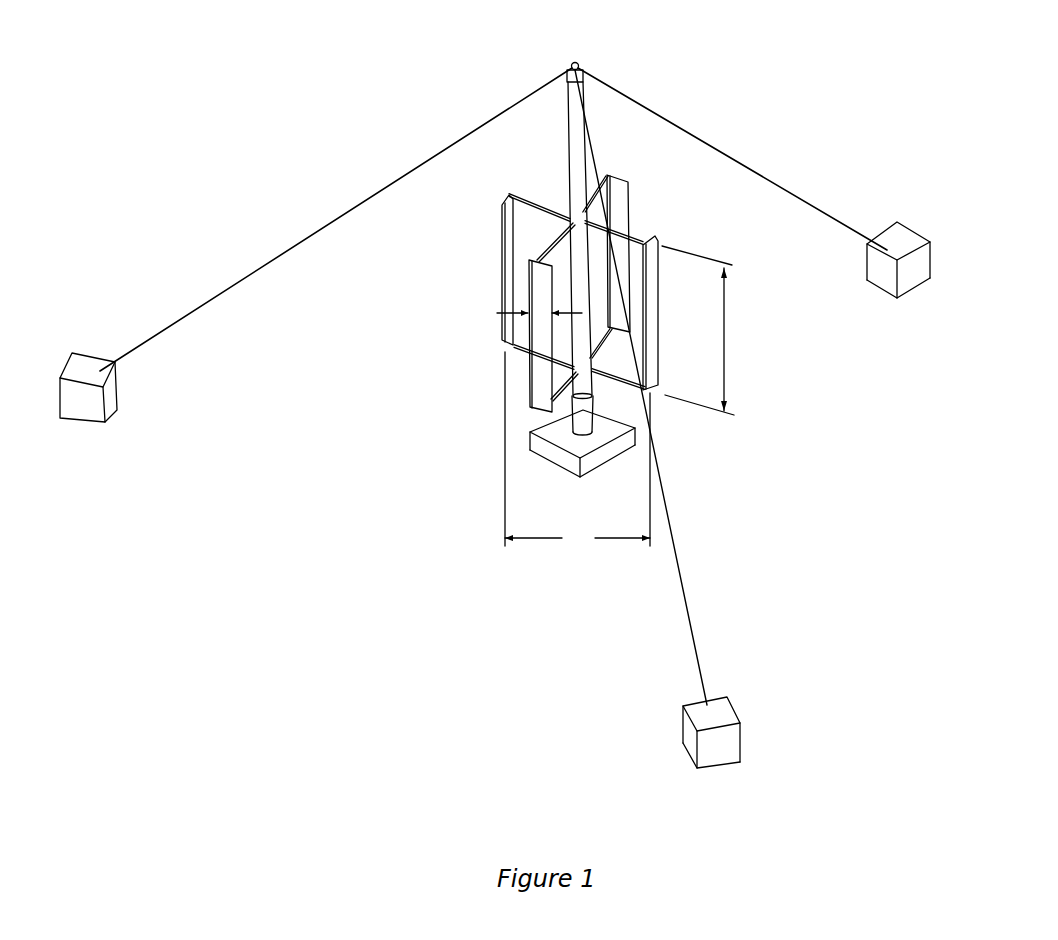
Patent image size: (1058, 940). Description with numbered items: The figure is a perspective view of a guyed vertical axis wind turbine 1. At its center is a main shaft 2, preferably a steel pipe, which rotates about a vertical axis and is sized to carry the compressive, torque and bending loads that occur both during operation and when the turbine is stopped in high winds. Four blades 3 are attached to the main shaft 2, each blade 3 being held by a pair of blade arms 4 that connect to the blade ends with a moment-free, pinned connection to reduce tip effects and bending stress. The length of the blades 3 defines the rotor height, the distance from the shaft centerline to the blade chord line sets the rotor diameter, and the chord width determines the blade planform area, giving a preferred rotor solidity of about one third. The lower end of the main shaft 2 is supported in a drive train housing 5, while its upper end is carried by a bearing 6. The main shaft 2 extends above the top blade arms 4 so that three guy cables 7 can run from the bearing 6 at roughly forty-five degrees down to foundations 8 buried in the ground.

The wind turbine 1 is at (455, 408).
The main shaft 2 is at (577, 246).
The blade 3 is at (500, 266).
The blade arm 4 is at (548, 210).
The drive train housing 5 is at (568, 480).
The bearing 6 is at (573, 63).
The guy cable 7 is at (380, 189).
The foundation 8 is at (85, 358).